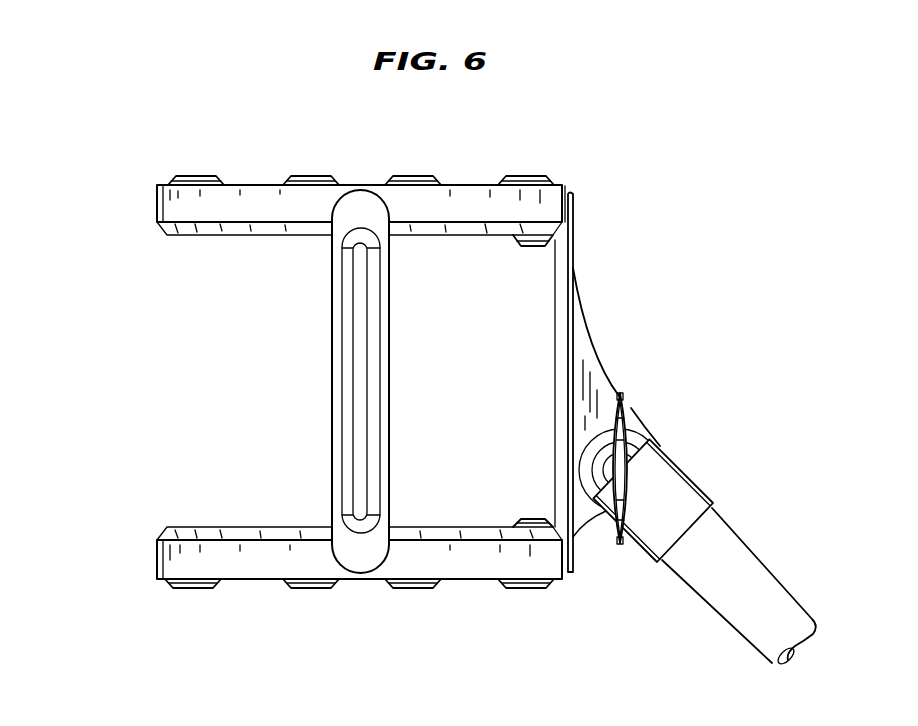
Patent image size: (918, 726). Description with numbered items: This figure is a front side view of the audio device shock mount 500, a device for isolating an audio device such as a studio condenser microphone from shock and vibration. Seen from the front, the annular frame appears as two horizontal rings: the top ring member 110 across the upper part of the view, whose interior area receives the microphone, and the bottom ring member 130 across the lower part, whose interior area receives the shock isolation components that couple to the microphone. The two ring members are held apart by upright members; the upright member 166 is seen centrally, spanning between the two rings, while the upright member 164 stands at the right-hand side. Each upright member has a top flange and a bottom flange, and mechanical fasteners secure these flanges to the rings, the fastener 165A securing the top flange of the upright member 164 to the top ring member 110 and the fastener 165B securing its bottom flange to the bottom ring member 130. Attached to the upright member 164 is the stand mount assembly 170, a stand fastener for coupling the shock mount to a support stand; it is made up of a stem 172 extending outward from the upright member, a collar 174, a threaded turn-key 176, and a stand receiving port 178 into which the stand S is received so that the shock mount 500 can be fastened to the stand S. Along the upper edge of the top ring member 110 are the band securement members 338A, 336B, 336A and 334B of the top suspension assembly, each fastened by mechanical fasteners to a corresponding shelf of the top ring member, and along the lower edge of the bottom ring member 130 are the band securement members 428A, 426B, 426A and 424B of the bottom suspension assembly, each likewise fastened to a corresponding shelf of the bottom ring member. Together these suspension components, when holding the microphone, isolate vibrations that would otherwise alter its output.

The audio device shock mount 500 is at (143, 120).
The top ring member 110 is at (359, 210).
The bottom ring member 130 is at (359, 553).
The upright member 166 is at (360, 381).
The upright member 164 is at (574, 213).
The mechanical fastener 165A is at (528, 247).
The mechanical fastener 165B is at (528, 521).
The stand mount assembly 170 is at (727, 401).
The stem 172 is at (592, 347).
The collar 174 is at (687, 490).
The threaded turn-key 176 is at (705, 533).
The stand receiving port 178 is at (620, 546).
The stand S is at (739, 587).
The band securement member 338A is at (200, 177).
The band securement member 336B is at (313, 177).
The band securement member 336A is at (413, 177).
The band securement member 334B is at (528, 177).
The band securement member 428A is at (196, 589).
The band securement member 426B is at (311, 589).
The band securement member 426A is at (410, 589).
The band securement member 424B is at (528, 589).